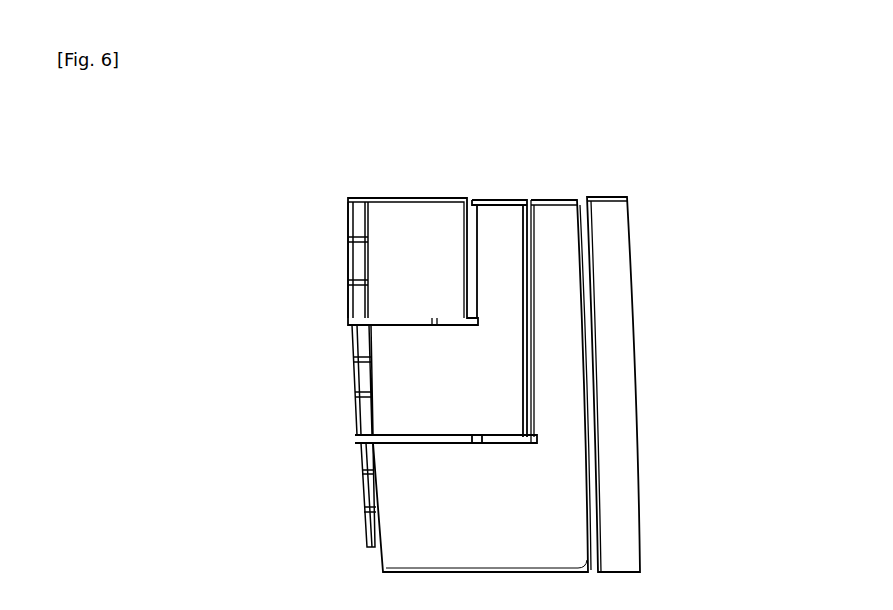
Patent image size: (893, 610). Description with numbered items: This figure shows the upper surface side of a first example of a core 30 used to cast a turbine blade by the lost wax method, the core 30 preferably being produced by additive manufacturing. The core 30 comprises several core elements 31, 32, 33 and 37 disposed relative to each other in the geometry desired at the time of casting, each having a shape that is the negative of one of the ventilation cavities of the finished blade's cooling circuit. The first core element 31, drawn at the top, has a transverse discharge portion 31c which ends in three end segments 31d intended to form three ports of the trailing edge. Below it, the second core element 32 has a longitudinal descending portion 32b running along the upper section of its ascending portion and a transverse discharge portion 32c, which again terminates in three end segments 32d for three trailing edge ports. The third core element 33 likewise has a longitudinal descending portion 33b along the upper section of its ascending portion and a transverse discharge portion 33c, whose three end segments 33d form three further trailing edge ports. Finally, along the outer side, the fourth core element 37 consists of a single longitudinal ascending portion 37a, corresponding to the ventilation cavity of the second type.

The core 30 is at (660, 225).
The first core element 31 is at (437, 233).
The transverse discharge portion 31c is at (397, 232).
The end segments 31d is at (353, 305).
The second core element 32 is at (491, 228).
The longitudinal descending portion 32b is at (497, 275).
The transverse discharge portion 32c is at (407, 352).
The end segments 32d is at (357, 413).
The third core element 33 is at (559, 213).
The longitudinal descending portion 33b is at (570, 333).
The transverse discharge portion 33c is at (430, 538).
The end segments 33d is at (371, 538).
The fourth core element 37 is at (603, 213).
The longitudinal ascending portion 37a is at (630, 492).